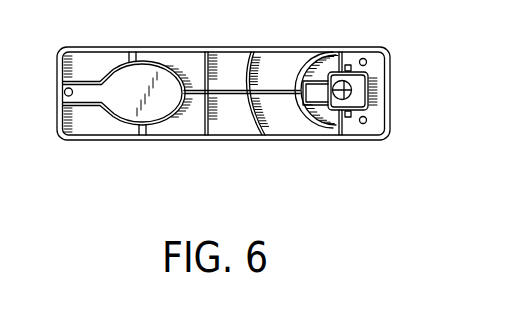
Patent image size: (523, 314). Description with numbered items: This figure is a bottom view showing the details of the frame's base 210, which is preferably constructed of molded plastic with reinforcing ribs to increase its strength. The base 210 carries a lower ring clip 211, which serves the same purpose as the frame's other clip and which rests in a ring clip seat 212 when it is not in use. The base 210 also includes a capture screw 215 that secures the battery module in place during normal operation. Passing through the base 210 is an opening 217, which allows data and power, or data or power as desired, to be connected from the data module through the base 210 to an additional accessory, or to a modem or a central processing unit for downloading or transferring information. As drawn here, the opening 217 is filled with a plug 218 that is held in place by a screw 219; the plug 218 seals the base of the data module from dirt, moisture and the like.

The base 210 is at (89, 149).
The lower ring clip 211 is at (386, 88).
The ring clip seat 212 is at (334, 127).
The capture screw 215 is at (352, 89).
The opening 217 is at (144, 130).
The plug 218 is at (126, 64).
The screw 219 is at (72, 88).